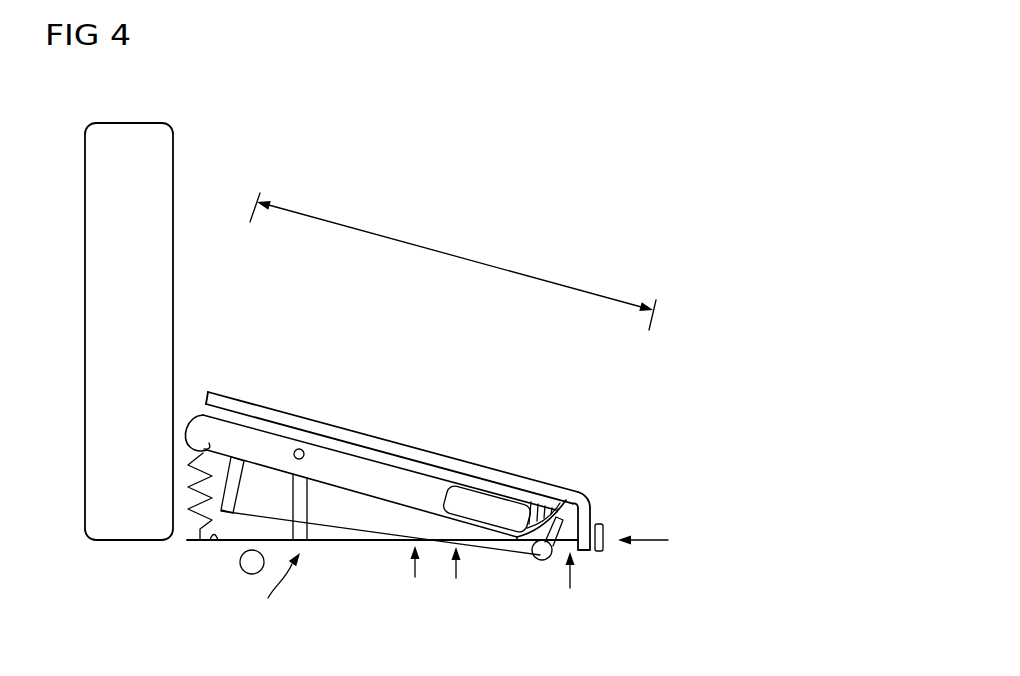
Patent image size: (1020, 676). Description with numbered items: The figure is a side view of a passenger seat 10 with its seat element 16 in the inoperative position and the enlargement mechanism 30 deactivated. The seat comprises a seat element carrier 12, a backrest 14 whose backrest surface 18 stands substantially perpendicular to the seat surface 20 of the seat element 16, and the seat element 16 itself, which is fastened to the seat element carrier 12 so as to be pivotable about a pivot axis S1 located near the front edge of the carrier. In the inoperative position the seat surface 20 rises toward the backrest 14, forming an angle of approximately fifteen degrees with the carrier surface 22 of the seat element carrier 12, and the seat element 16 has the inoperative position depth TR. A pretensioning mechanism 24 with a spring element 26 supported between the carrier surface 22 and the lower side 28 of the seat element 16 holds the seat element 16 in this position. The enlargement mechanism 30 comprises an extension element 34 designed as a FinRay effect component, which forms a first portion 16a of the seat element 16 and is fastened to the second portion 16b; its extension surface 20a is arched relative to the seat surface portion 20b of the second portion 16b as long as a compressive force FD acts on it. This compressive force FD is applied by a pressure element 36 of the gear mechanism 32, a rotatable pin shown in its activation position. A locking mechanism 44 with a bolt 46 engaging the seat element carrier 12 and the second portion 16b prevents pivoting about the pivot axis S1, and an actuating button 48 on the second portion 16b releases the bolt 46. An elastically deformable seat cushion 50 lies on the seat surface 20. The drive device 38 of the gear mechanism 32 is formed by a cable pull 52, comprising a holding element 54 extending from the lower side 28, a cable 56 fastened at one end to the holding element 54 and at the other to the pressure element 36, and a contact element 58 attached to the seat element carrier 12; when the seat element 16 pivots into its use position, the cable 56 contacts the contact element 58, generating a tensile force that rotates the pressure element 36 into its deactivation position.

The passenger seat 10 is at (403, 332).
The seat element carrier 12 is at (374, 542).
The backrest 14 is at (163, 303).
The seat element 16 is at (376, 438).
The first portion of the seat element 16a is at (537, 507).
The second portion of the seat element 16b is at (351, 438).
The backrest surface 18 is at (176, 249).
The seat surface 20 is at (409, 449).
The extension surface 20a is at (581, 498).
The seat surface portion 20b is at (403, 462).
The carrier surface 22 is at (217, 543).
The pretensioning mechanism 24 is at (316, 554).
The spring element 26 is at (192, 528).
The lower side of the seat element 28 is at (188, 418).
The enlargement mechanism 30 is at (663, 546).
The gear mechanism 32 is at (458, 599).
The extension element 34 is at (603, 527).
The pressure element 36 is at (555, 557).
The drive device 38 is at (418, 598).
The locking mechanism 44 is at (277, 594).
The bolt 46 is at (309, 541).
The actuating button 48 is at (304, 448).
The seat cushion 50 is at (236, 402).
The cable pull 52 is at (432, 502).
The holding element 54 is at (229, 490).
The cable 56 is at (485, 553).
The contact element 58 is at (253, 574).
The pivot axis S1 is at (514, 542).
The inoperative position depth TR is at (456, 254).
The compressive force FD is at (570, 588).